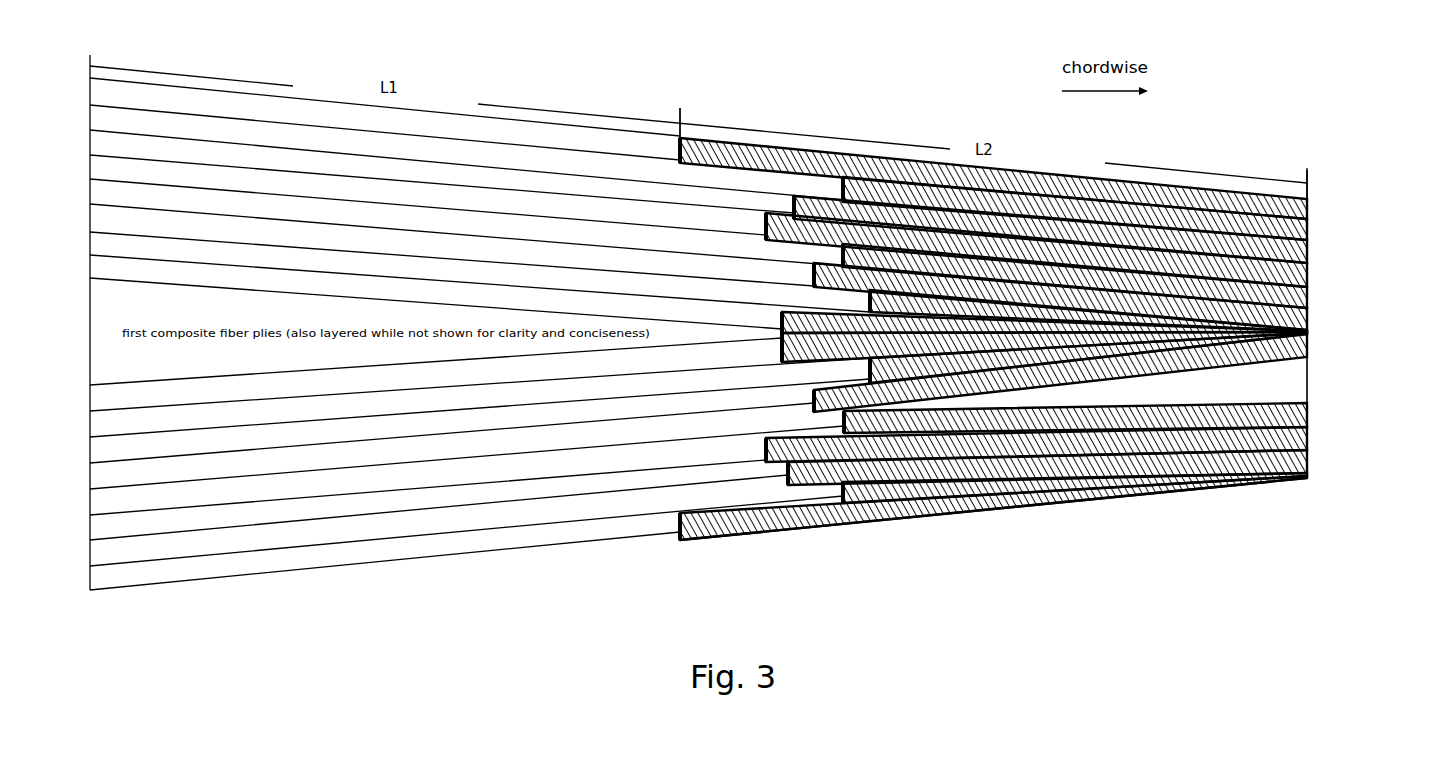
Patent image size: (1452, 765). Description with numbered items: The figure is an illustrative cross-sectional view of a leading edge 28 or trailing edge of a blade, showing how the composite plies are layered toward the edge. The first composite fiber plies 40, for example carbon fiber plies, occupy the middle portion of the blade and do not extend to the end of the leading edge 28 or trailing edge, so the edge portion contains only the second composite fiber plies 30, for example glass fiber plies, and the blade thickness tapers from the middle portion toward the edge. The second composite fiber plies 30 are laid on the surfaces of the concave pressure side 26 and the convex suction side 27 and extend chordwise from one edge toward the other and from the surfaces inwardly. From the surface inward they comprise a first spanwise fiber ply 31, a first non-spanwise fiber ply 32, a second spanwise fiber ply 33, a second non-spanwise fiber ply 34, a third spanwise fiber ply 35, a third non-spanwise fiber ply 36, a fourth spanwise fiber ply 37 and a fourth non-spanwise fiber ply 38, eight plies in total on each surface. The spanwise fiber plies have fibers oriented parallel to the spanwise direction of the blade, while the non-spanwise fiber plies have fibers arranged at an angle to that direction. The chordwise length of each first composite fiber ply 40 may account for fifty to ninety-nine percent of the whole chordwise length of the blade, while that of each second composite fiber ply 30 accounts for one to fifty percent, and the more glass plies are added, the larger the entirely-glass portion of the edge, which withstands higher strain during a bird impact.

The concave pressure side 26 is at (1000, 133).
The convex suction side 27 is at (1000, 540).
The leading edge 28 is at (1330, 170).
The second composite fiber plies 30 is at (1308, 170).
The first spanwise fiber ply 31 is at (1259, 198).
The first non-spanwise fiber ply 32 is at (1307, 237).
The second spanwise fiber ply 33 is at (1307, 257).
The second non-spanwise fiber ply 34 is at (1307, 283).
The third spanwise fiber ply 35 is at (1307, 312).
The third non-spanwise fiber ply 36 is at (1307, 353).
The fourth spanwise fiber ply 37 is at (872, 310).
The fourth non-spanwise fiber ply 38 is at (782, 313).
The first composite fiber plies 40 is at (633, 121).